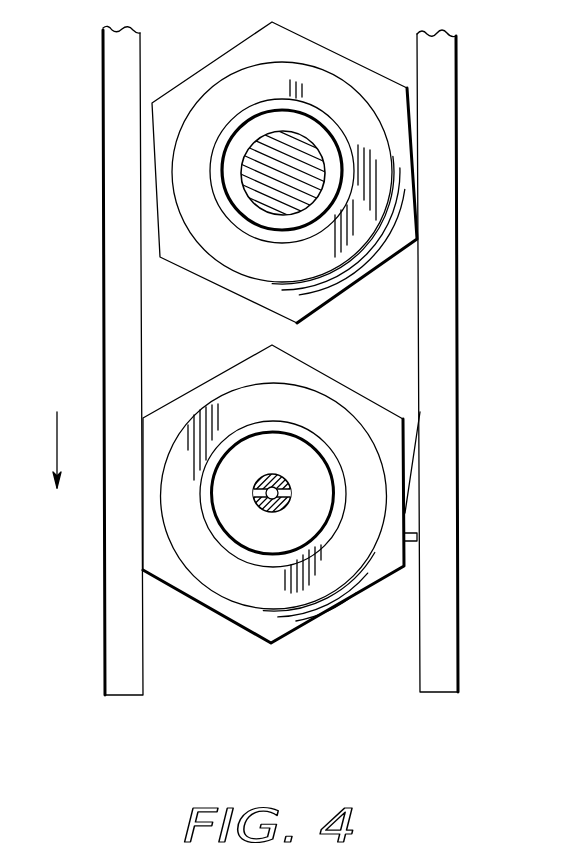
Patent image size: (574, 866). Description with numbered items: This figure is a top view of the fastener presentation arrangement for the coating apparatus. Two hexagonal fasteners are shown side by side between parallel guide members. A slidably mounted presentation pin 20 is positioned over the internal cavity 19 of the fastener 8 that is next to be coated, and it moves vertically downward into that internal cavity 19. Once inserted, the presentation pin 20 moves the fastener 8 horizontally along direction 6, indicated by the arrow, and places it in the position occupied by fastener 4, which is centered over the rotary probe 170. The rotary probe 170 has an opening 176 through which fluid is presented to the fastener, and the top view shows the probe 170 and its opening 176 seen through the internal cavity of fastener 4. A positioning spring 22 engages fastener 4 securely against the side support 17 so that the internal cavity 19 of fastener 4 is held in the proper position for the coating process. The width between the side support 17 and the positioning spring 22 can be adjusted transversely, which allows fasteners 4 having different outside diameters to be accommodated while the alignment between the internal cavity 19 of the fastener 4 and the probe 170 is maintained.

The fastener 4 is at (148, 525).
The direction 6 is at (57, 448).
The fastener 8 is at (175, 238).
The side support 17 is at (437, 98).
The internal cavity 19 is at (333, 175).
The presentation pin 20 is at (292, 150).
The positioning spring 22 is at (410, 525).
The rotary probe 170 is at (287, 471).
The opening 176 is at (300, 492).